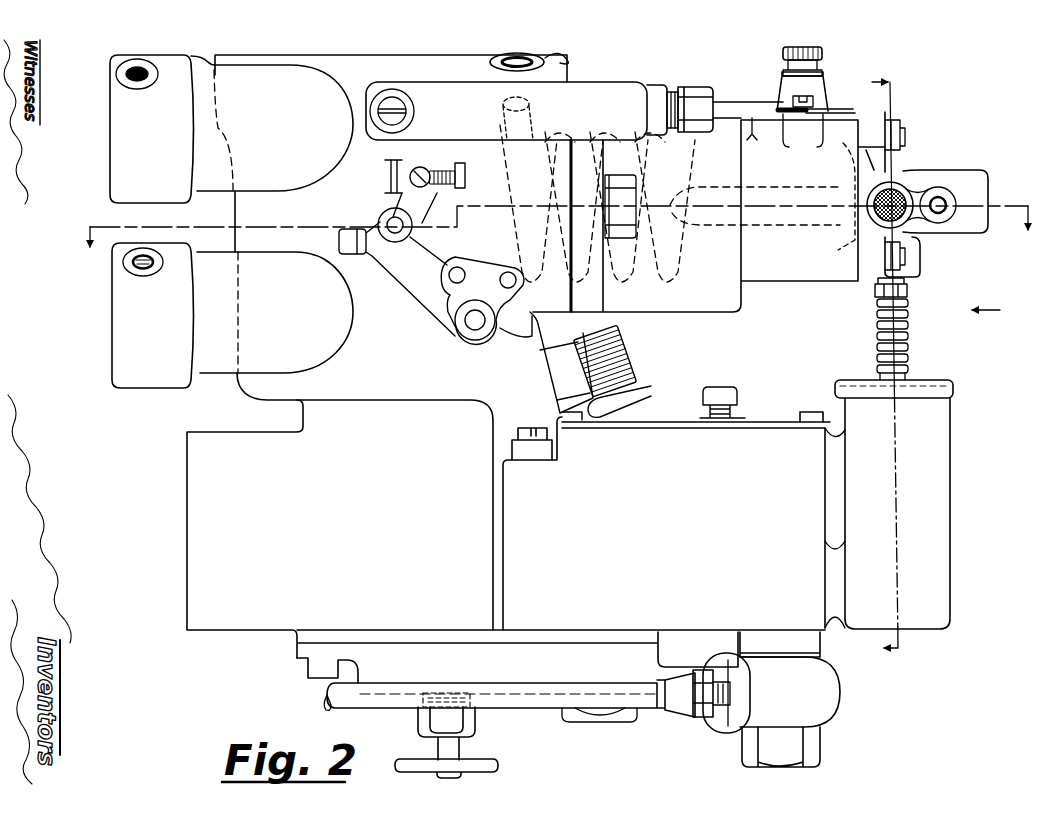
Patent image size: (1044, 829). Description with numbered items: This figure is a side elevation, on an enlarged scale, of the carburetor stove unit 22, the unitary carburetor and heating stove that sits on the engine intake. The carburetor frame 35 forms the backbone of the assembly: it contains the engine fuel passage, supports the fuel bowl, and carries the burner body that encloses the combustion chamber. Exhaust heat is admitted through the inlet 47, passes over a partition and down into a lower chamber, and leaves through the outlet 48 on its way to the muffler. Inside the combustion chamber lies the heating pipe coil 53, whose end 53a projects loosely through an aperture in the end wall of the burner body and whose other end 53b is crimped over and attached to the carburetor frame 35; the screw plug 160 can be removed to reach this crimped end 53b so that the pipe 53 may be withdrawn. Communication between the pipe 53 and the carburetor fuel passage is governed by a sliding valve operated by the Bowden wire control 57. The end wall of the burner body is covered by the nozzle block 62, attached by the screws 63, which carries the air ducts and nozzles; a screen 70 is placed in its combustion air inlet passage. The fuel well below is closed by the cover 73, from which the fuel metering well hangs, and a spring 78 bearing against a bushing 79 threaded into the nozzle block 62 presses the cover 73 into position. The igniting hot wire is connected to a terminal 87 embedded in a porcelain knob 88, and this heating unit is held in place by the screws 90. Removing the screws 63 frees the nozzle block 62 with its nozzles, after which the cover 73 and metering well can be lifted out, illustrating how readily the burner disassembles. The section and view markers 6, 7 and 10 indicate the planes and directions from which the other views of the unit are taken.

The carburetor frame 35 is at (391, 62).
The screw plug 160 is at (552, 59).
The inlet 47 is at (135, 150).
The outlet 48 is at (130, 322).
The section line 6- 6 is at (557, 240).
The end of pipe 53b is at (535, 127).
The heating pipe coil 53 is at (675, 178).
The end of pipe 53a is at (840, 185).
The Bowden wire control 57 is at (737, 105).
The porcelain knob 88 is at (789, 90).
The terminal 87 is at (787, 55).
The screws 90 is at (808, 95).
The section line 10- 10 is at (872, 367).
The screws 63 is at (903, 126).
The screen 70 is at (906, 188).
The nozzle block 62 is at (910, 247).
The bushing 79 is at (907, 294).
The spring 78 is at (908, 331).
The view arrow 7 is at (993, 311).
The cover 73 is at (953, 384).
The carburetor stove unit 22 is at (998, 490).